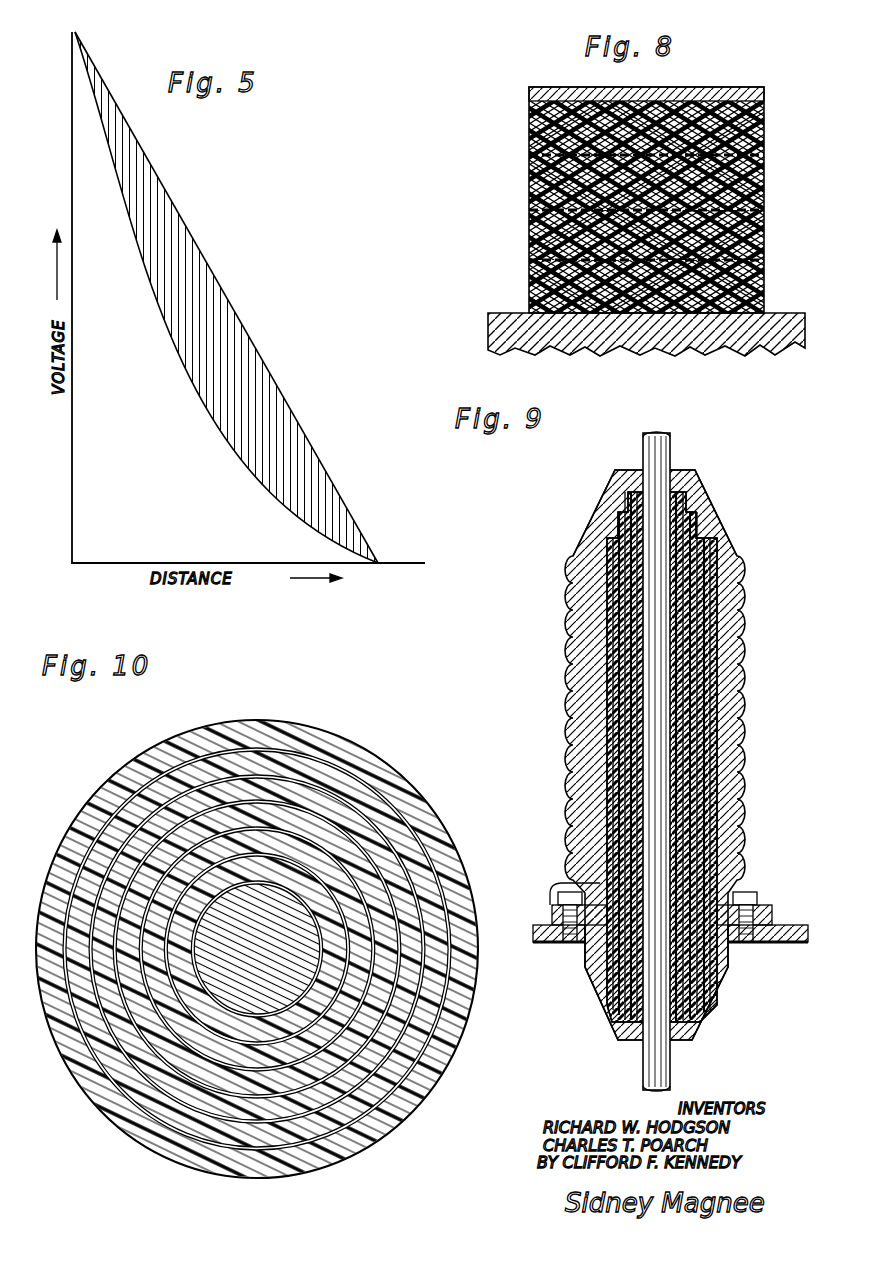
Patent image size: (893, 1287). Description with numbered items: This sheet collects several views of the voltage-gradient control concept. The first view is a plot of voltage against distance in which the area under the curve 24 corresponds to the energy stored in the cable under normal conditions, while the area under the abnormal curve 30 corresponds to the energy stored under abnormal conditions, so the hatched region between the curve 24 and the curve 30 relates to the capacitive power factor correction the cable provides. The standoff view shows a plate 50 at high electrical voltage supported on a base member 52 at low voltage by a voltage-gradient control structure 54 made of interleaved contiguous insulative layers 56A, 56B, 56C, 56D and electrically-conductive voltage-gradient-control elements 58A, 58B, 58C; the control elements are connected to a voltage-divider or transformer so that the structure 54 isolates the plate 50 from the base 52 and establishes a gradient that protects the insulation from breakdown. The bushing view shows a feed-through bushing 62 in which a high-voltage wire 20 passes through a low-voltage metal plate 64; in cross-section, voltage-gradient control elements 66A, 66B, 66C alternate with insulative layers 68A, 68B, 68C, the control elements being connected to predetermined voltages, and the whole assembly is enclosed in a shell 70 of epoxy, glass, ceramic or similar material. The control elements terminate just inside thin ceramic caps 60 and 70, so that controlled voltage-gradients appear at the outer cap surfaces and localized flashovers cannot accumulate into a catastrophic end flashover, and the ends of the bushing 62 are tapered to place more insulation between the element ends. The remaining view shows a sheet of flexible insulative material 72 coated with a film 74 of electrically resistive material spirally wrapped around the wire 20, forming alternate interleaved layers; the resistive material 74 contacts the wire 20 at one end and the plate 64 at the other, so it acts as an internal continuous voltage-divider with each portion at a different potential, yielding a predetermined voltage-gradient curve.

In FIG. 9, the high-voltage wire 20 is at (643, 452).
In FIG. 10, the high-voltage wire 20 is at (256, 949).
In FIG. 5, the voltage-gradient curve 24 is at (158, 302).
In FIG. 5, the abnormal voltage-gradient curve 30 is at (161, 175).
In FIG. 8, the plate 50 is at (710, 94).
In FIG. 8, the base member 52 is at (525, 312).
In FIG. 8, the voltage-gradient control structure 54 is at (514, 248).
In FIG. 8, the insulative layer 56A is at (533, 128).
In FIG. 8, the insulative layer 56B is at (576, 182).
In FIG. 8, the insulative layer 56C is at (533, 235).
In FIG. 8, the insulative layer 56D is at (576, 287).
In FIG. 8, the voltage-gradient-control element 58A is at (762, 156).
In FIG. 8, the voltage-gradient-control element 58B is at (764, 210).
In FIG. 8, the voltage-gradient-control element 58C is at (764, 260).
In FIG. 9, the ceramic cap 60 is at (598, 1000).
In FIG. 9, the feed-through bushing 62 is at (570, 614).
In FIG. 9, the low-voltage metal plate 64 is at (548, 912).
In FIG. 9, the voltage-gradient control element 66A is at (708, 600).
In FIG. 9, the voltage-gradient control element 66B is at (702, 632).
In FIG. 9, the voltage-gradient control element 66C is at (696, 668).
In FIG. 9, the insulative layer 68A is at (700, 702).
In FIG. 9, the insulative layer 68B is at (700, 740).
In FIG. 9, the insulative layer 68C is at (700, 798).
In FIG. 9, the shell 70 is at (680, 469).
In FIG. 10, the shell 70 is at (257, 940).
In FIG. 10, the flexible insulative material sheet 72 is at (274, 949).
In FIG. 10, the electrically resistive film 74 is at (292, 932).